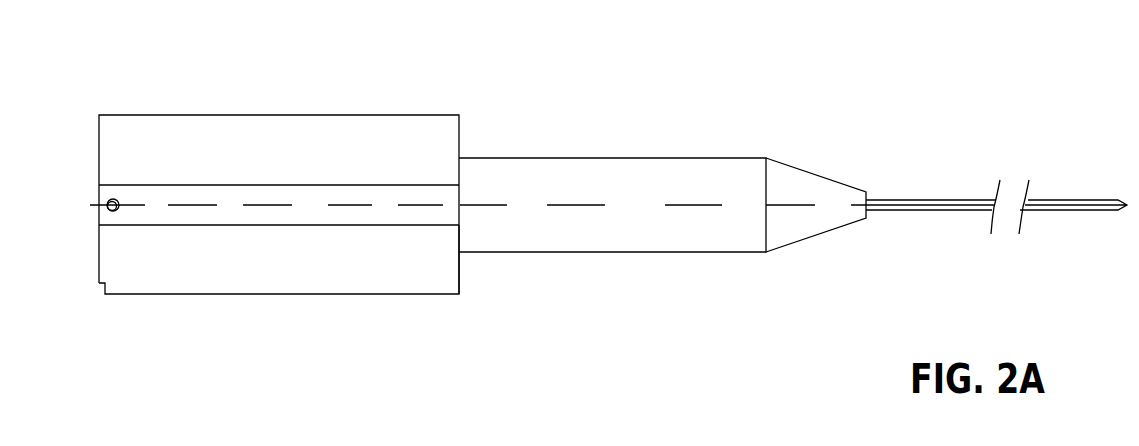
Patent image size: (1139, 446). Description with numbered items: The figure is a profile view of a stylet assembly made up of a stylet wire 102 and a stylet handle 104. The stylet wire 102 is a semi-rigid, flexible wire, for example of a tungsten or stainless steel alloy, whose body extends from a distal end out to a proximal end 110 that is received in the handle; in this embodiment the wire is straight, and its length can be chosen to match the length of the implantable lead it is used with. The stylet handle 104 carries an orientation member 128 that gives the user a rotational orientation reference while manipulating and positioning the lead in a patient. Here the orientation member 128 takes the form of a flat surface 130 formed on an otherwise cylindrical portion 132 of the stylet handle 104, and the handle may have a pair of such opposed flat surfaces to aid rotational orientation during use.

The stylet wire 102 is at (948, 198).
The stylet handle 104 is at (300, 130).
The proximal end 110 is at (113, 212).
The orientation member 128 is at (345, 218).
The flat surface 130 is at (233, 193).
The cylindrical portion 132 is at (442, 270).